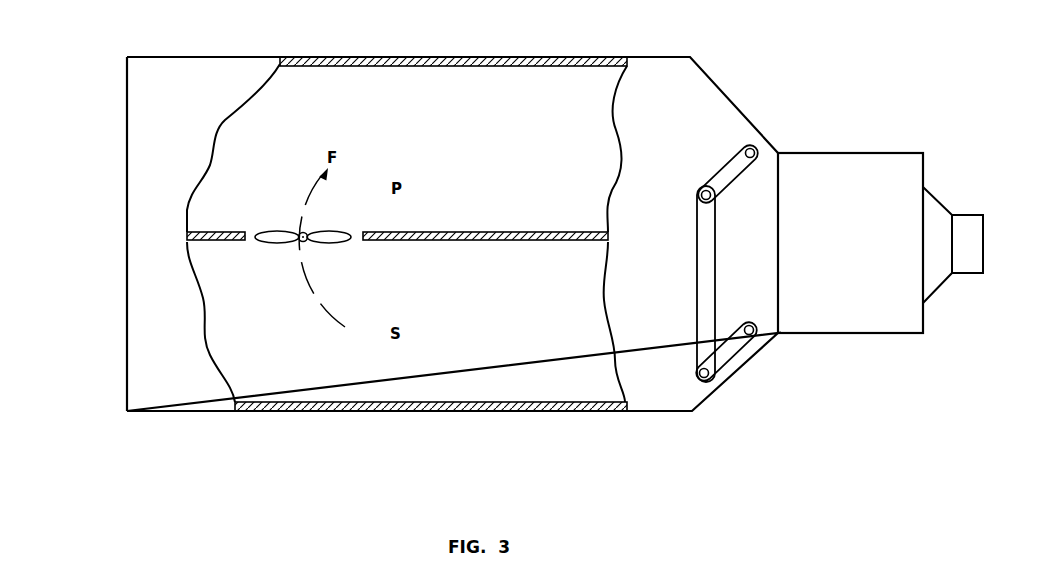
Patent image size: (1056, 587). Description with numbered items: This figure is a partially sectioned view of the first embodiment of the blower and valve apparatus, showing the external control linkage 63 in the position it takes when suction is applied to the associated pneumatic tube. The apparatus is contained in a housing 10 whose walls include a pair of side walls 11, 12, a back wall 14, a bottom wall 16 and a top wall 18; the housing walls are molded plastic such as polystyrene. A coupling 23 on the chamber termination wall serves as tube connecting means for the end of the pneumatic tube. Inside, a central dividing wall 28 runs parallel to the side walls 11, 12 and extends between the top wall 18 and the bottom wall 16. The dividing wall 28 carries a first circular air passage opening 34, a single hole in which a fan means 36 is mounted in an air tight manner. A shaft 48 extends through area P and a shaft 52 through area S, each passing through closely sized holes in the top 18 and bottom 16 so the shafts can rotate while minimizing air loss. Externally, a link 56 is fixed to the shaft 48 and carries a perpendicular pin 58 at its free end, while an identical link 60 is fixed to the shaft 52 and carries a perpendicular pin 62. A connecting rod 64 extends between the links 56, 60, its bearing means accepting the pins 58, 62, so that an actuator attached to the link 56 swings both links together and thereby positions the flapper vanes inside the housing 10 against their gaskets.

The housing 10 is at (183, 470).
The side wall 11 is at (360, 413).
The side wall 12 is at (420, 58).
The back wall 14 is at (125, 237).
The bottom wall 16 is at (449, 119).
The top wall 18 is at (184, 119).
The coupling 23 is at (960, 274).
The central dividing wall 28 is at (476, 243).
The first circular air passage opening 34 is at (350, 250).
The fan means 36 is at (291, 232).
The shaft 48 is at (745, 148).
The shaft 52 is at (755, 337).
The link 56 is at (728, 168).
The perpendicular pin 58 is at (700, 194).
The link 60 is at (732, 352).
The perpendicular pin 62 is at (710, 379).
The control linkage 63 is at (760, 246).
The connecting rod 64 is at (710, 297).